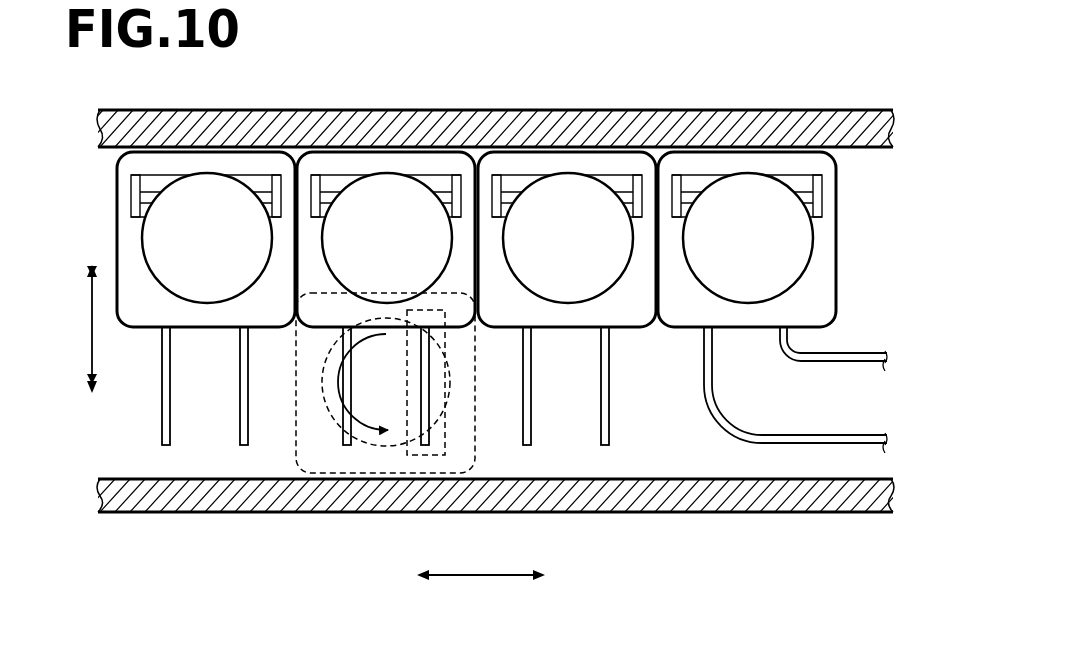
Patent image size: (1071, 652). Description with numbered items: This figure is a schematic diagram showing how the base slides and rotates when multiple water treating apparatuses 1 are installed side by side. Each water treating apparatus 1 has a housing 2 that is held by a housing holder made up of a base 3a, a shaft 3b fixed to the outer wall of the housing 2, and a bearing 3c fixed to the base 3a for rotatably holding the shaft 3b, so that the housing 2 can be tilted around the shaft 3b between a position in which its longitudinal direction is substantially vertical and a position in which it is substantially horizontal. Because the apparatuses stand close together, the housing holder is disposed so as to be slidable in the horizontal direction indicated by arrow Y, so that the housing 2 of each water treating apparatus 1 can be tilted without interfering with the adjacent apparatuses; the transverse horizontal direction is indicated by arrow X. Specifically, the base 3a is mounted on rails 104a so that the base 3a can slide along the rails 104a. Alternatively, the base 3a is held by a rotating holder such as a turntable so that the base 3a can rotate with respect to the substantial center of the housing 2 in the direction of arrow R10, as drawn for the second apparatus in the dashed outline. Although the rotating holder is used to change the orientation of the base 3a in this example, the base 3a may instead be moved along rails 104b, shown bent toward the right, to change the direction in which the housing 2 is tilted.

The water treating apparatus 1 is at (510, 224).
The housing 2 is at (378, 188).
The base 3a is at (378, 160).
The shaft 3b is at (455, 188).
The bearing 3c is at (442, 173).
The rails 104a is at (244, 447).
The rails 104b is at (818, 435).
The arrow R10 is at (385, 383).
The arrow X is at (481, 587).
The arrow Y is at (81, 329).